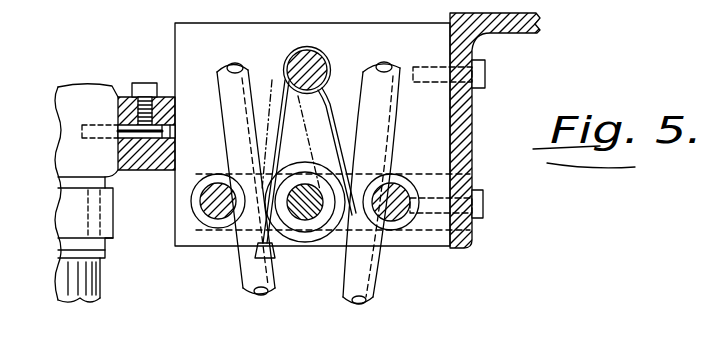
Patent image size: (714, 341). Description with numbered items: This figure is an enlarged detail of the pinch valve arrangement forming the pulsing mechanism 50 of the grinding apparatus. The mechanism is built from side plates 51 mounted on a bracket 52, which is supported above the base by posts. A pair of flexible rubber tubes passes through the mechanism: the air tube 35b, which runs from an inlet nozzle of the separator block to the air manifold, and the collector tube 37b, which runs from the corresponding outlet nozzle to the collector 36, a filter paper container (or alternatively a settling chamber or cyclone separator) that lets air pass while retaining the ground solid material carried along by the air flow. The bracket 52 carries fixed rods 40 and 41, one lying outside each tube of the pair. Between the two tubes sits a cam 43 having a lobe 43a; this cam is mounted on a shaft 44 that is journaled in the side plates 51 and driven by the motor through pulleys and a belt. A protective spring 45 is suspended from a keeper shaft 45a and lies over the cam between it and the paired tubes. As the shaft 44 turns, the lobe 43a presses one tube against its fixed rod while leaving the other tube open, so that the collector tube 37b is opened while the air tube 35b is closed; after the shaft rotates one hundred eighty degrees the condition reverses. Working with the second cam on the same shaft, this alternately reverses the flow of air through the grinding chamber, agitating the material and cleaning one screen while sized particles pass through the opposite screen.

The pulsing mechanism 50 is at (320, 20).
The side plates 51 is at (175, 50).
The bracket 52 is at (473, 112).
The collector 36 is at (102, 275).
The flexible rubber tube 37b is at (232, 63).
The flexible rubber tube 35b is at (392, 62).
The protective spring 45 is at (330, 128).
The keeper shaft 45a is at (330, 50).
The shaft 44 is at (301, 177).
The cam 43 is at (336, 243).
The lobe 43a is at (360, 172).
The fixed rod 40 is at (222, 207).
The fixed rod 41 is at (397, 234).